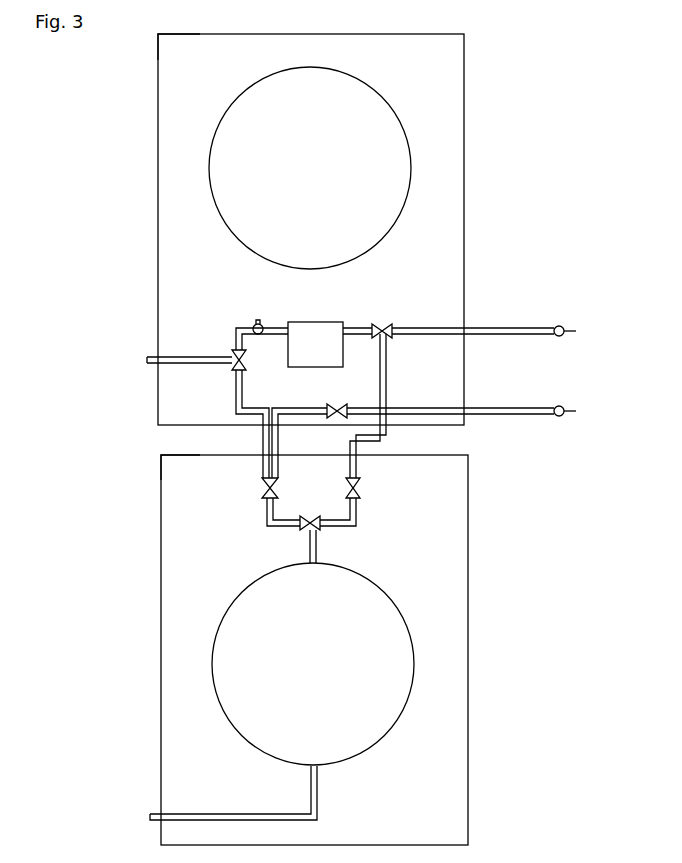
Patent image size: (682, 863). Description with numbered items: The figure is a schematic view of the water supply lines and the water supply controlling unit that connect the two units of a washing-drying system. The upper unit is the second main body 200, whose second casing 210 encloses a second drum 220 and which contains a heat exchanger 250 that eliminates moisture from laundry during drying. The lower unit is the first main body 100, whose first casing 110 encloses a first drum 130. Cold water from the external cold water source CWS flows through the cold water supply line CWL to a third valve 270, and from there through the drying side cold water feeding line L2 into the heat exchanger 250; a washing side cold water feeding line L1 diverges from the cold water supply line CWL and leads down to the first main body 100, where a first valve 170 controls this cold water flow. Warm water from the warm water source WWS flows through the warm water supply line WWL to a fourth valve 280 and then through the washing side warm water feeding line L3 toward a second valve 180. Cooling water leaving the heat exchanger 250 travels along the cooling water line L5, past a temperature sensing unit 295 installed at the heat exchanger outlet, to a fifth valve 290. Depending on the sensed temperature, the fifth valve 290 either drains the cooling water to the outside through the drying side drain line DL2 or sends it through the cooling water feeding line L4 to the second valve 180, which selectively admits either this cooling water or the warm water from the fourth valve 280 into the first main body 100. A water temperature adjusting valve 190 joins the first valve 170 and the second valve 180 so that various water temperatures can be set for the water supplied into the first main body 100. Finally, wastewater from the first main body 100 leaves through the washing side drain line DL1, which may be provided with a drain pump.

The first main body 100 is at (146, 620).
The first casing 110 is at (167, 515).
The first drum 130 is at (218, 667).
The first valve 170 is at (360, 492).
The second valve 180 is at (262, 490).
The water temperature adjusting valve 190 is at (310, 518).
The second main body 200 is at (146, 271).
The second casing 210 is at (163, 96).
The second drum 220 is at (217, 170).
The heat exchanger 250 is at (315, 322).
The third valve 270 is at (381, 324).
The fourth valve 280 is at (336, 405).
The fifth valve 290 is at (247, 364).
The temperature sensing unit 295 is at (259, 320).
The washing side cold water feeding line L1 is at (387, 390).
The drying side cold water feeding line L2 is at (351, 328).
The washing side warm water feeding line L3 is at (279, 440).
The cooling water feeding line L4 is at (262, 440).
The cooling water line L5 is at (236, 339).
The cold water supply line CWL is at (513, 328).
The cold water source CWS is at (583, 331).
The warm water supply line WWL is at (513, 408).
The warm water source WWS is at (585, 411).
The washing side drain line DL1 is at (150, 818).
The drying side drain line DL2 is at (147, 361).